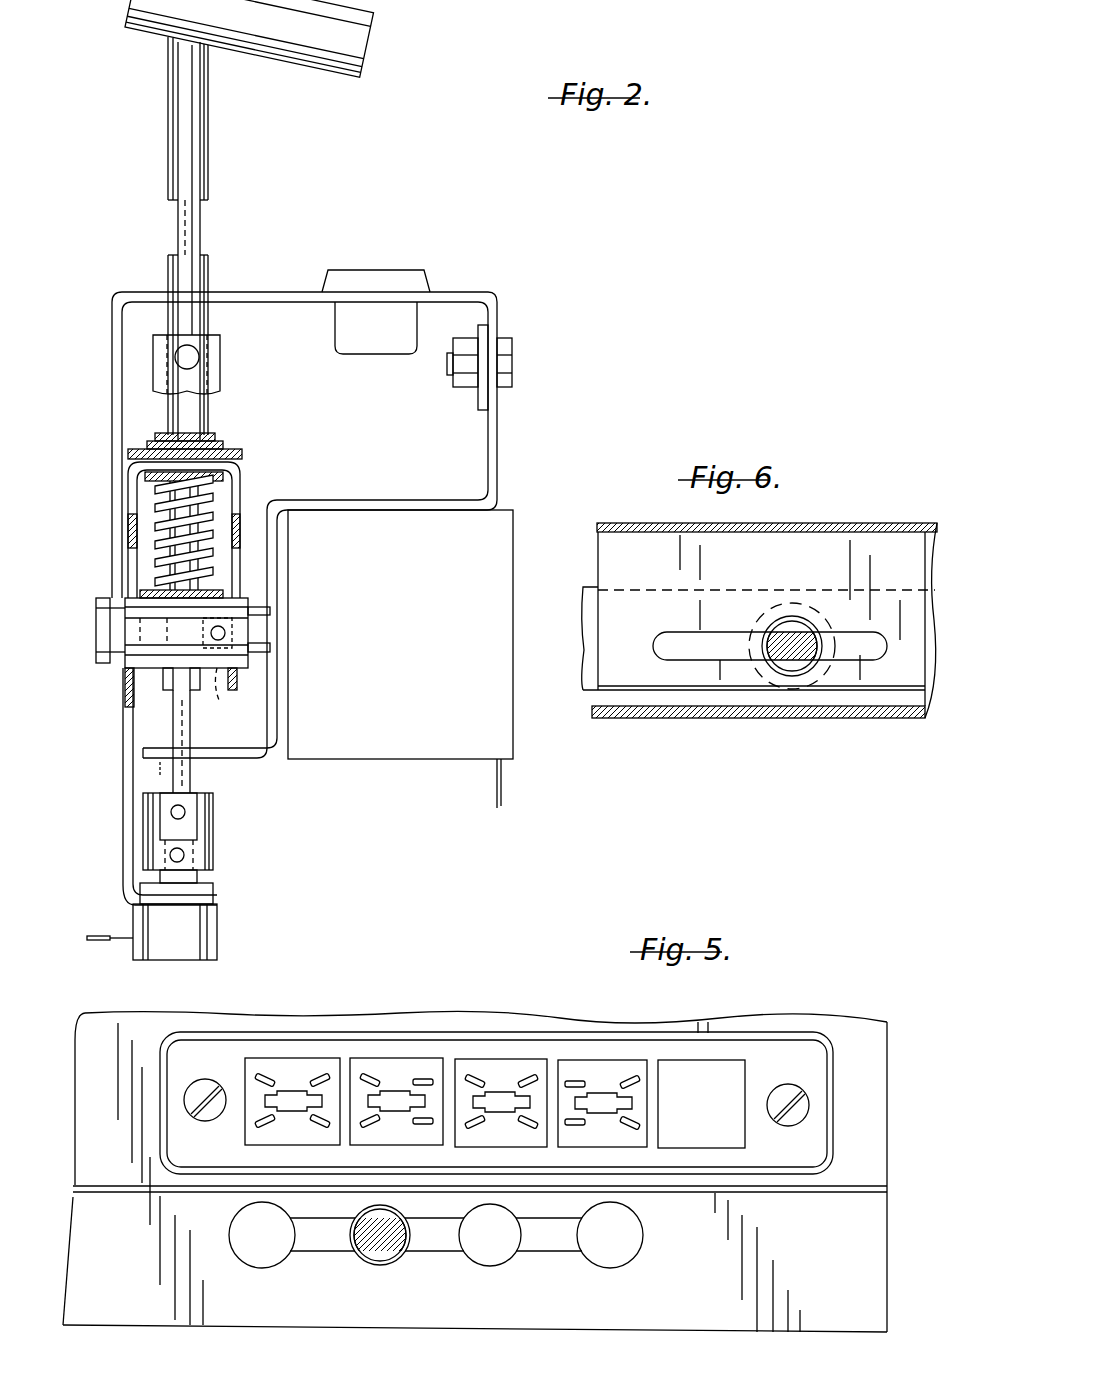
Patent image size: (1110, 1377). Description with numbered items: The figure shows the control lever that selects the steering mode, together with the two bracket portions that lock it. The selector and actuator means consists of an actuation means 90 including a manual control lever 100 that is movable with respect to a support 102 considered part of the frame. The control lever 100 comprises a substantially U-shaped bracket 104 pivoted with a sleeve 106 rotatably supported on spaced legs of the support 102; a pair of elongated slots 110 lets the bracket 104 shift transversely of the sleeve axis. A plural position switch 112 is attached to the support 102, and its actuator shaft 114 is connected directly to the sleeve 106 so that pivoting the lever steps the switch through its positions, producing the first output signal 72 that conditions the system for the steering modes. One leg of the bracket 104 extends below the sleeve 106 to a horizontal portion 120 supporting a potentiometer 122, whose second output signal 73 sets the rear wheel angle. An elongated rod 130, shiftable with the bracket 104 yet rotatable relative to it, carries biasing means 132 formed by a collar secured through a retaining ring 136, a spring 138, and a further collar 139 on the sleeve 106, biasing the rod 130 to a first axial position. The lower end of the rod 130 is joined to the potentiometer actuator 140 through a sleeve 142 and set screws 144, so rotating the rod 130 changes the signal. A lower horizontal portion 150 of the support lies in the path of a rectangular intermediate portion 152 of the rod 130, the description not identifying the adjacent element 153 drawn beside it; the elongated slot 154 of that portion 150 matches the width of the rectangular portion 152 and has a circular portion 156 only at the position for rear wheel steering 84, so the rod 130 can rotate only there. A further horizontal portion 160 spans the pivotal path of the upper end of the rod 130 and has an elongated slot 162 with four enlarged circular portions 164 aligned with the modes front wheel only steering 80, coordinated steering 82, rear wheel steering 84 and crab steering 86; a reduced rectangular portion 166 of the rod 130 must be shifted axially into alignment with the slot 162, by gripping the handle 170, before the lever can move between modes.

In FIG. 2, the first output signal 72 is at (100, 935).
In FIG. 2, the second output signal 73 is at (503, 796).
In FIG. 5, the front wheel only steering 80 is at (584, 1065).
In FIG. 5, the coordinated or radiarc steering 82 is at (495, 1066).
In FIG. 5, the rear wheel steering 84 is at (390, 1067).
In FIG. 5, the crab steering 86 is at (292, 1068).
In FIG. 2, the actuation means 90 is at (100, 46).
In FIG. 2, the manual control lever 100 is at (170, 122).
In FIG. 2, the support 102 is at (112, 334).
In FIG. 2, the U-shaped bracket 104 is at (135, 468).
In FIG. 2, the sleeve 106 is at (97, 634).
In FIG. 2, the elongated slots 110 is at (240, 548).
In FIG. 2, the plural position switch 112 is at (430, 616).
In FIG. 2, the actuator shaft 114 is at (228, 676).
In FIG. 2, the horizontal portion 120 is at (218, 900).
In FIG. 2, the potentiometer 122 is at (200, 927).
In FIG. 2, the elongated rod 130 is at (200, 168).
In FIG. 2, the biasing means 132 is at (144, 512).
In FIG. 2, the retaining ring 136 is at (214, 477).
In FIG. 2, the spring 138 is at (158, 566).
In FIG. 2, the further collar 139 is at (142, 591).
In FIG. 2, the actuator 140 is at (143, 852).
In FIG. 2, the sleeve 142 is at (145, 810).
In FIG. 2, the set screws 144 is at (185, 855).
In FIG. 2, the lower horizontal portion 150 is at (255, 760).
In FIG. 6, the lower horizontal portion 150 is at (622, 553).
In FIG. 2, the intermediate portion 152 is at (172, 722).
In FIG. 6, the intermediate portion 152 is at (789, 652).
In FIG. 2, the slot 153 is at (196, 735).
In FIG. 6, the elongated slot 154 is at (686, 643).
In FIG. 6, the circular portion 156 is at (803, 677).
In FIG. 5, the horizontal portion 160 is at (162, 1245).
In FIG. 5, the elongated slot 162 is at (322, 1250).
In FIG. 5, the enlarged circular portions 164 is at (258, 1265).
In FIG. 2, the reduced portion 166 is at (188, 236).
In FIG. 5, the reduced portion 166 is at (392, 1252).
In FIG. 2, the handle 170 is at (345, 48).